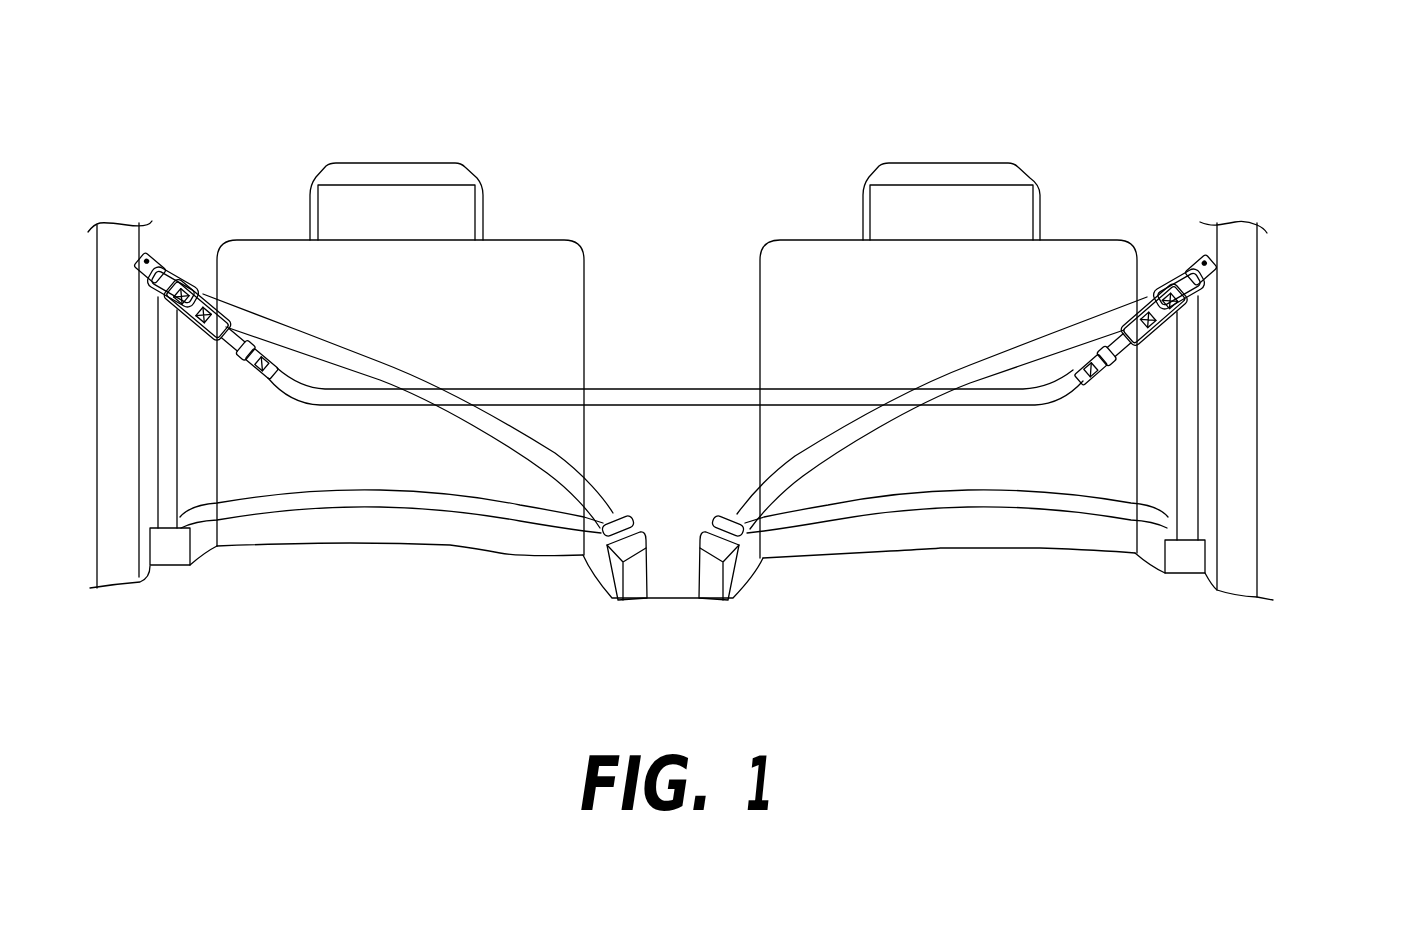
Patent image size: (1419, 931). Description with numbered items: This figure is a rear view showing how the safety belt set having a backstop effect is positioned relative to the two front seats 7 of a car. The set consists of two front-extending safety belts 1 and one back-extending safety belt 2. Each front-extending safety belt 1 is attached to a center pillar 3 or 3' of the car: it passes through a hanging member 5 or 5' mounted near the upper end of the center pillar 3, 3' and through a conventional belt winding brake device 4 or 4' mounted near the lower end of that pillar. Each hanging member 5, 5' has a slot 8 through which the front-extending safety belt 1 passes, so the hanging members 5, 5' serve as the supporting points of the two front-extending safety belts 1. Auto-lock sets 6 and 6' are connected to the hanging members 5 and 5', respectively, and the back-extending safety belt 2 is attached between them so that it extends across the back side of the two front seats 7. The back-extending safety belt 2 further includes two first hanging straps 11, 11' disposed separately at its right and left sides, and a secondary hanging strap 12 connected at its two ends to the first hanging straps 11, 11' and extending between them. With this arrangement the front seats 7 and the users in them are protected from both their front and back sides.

The front-extending safety belt 1 is at (353, 357).
The back-extending safety belt 2 is at (652, 386).
The center pillar 3 is at (114, 404).
The center pillar 3' is at (1298, 410).
The belt winding brake device 4 is at (208, 589).
The belt winding brake device 4' is at (1170, 626).
The hanging member 5 is at (148, 190).
The hanging member 5' is at (1294, 273).
The auto-lock set 6 is at (203, 252).
The auto-lock set 6' is at (1148, 227).
The front seat 7 is at (815, 247).
The slot 8 is at (163, 258).
The first hanging strap 11 is at (246, 269).
The first hanging strap 11' is at (1206, 350).
The secondary hanging strap 12 is at (671, 398).